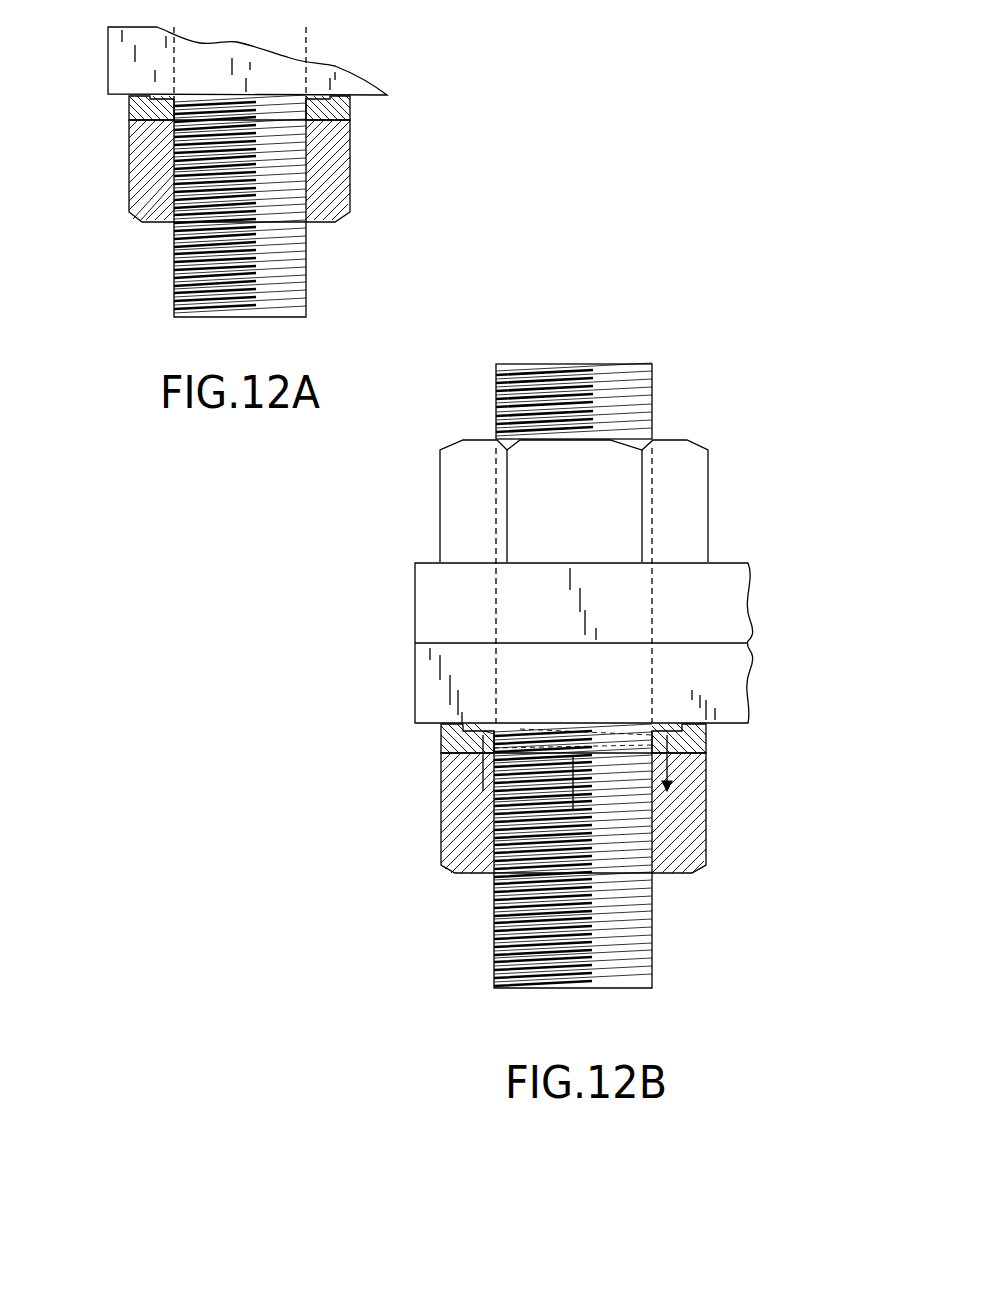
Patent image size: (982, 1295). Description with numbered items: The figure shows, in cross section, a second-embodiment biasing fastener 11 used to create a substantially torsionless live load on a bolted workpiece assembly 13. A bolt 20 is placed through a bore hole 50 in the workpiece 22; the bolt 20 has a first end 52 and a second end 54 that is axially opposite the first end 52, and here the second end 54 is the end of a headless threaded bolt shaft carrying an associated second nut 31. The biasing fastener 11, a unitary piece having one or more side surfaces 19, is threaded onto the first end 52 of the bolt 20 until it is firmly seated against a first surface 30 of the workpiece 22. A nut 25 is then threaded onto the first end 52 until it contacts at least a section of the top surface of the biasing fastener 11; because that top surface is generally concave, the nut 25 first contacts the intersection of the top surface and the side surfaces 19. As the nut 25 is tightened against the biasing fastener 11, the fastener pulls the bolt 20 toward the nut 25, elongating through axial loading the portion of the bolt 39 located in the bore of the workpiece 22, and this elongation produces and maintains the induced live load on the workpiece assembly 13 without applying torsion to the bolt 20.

In FIG. 12A, the biasing fastener 11 is at (110, 116).
In FIG. 12B, the biasing fastener 11 is at (428, 750).
In FIG. 12B, the bolted workpiece assembly 13 is at (818, 850).
In FIG. 12A, the side surfaces 19 is at (127, 120).
In FIG. 12B, the side surfaces 19 is at (440, 735).
In FIG. 12A, the bolt 20 is at (167, 258).
In FIG. 12B, the bolt 20 is at (518, 953).
In FIG. 12B, the workpiece 22 is at (425, 672).
In FIG. 12A, the nut 25 is at (338, 188).
In FIG. 12B, the nut 25 is at (700, 843).
In FIG. 12A, the first surface of the workpiece 30 is at (367, 95).
In FIG. 12B, the first surface of the workpiece 30 is at (733, 723).
In FIG. 12B, the second nut 31 is at (445, 478).
In FIG. 12B, the portion of the bolt 39 is at (760, 563).
In FIG. 12B, the bore hole 50 is at (650, 685).
In FIG. 12B, the first end of the bolt 52 is at (630, 988).
In FIG. 12B, the second end of the bolt 54 is at (634, 362).